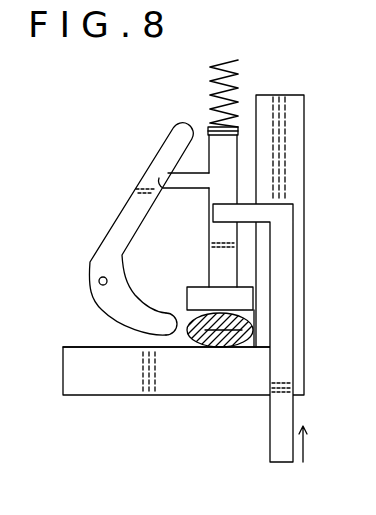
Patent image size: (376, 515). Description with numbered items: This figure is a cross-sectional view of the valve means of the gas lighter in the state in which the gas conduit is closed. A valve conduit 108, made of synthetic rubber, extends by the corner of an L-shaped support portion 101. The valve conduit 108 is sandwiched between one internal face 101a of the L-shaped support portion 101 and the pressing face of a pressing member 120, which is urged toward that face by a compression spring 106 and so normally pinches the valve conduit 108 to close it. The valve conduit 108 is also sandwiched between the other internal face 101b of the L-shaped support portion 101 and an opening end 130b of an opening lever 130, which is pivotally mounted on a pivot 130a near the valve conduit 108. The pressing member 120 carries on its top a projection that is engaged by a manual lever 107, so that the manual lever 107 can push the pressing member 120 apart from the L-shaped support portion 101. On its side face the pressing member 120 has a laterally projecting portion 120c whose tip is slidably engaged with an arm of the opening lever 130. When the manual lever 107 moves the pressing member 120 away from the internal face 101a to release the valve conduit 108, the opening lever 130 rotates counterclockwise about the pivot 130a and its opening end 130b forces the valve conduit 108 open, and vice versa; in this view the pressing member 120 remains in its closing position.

The L-shaped support portion 101 is at (112, 380).
The internal face 101a is at (90, 346).
The other internal face 101b is at (256, 106).
The compression spring 106 is at (233, 59).
The manual lever 107 is at (283, 463).
The valve conduit 108 is at (186, 316).
The pressing member 120 is at (238, 161).
The laterally projecting portion 120c is at (187, 182).
The opening lever 130 is at (134, 194).
The pivot 130a is at (100, 276).
The opening end 130b is at (162, 323).